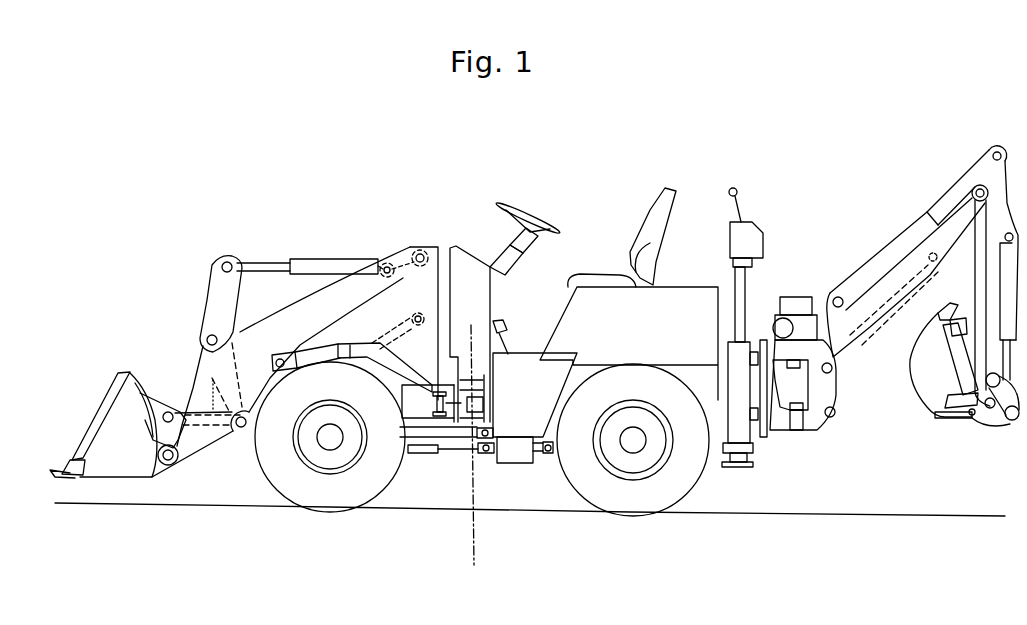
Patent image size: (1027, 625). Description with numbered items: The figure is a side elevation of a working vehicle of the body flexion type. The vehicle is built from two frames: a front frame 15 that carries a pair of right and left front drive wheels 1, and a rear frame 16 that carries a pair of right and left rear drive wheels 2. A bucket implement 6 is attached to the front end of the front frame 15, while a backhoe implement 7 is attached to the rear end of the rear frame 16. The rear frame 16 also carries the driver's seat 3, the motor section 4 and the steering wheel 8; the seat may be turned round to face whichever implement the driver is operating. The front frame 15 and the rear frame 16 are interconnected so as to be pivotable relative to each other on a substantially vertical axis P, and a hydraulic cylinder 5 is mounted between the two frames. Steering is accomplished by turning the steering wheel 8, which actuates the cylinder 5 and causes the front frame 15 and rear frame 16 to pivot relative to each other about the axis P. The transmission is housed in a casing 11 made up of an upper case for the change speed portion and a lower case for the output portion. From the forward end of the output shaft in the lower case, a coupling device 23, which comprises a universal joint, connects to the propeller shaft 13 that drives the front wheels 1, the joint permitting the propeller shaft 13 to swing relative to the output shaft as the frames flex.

The front drive wheels 1 is at (265, 471).
The rear drive wheels 2 is at (688, 484).
The driver's seat 3 is at (641, 224).
The motor section 4 is at (688, 287).
The hydraulic cylinder 5 is at (486, 402).
The bucket implement 6 is at (136, 367).
The backhoe implement 7 is at (943, 420).
The steering wheel 8 is at (530, 207).
The casing 11 is at (523, 460).
The propeller shaft 13 is at (451, 456).
The front frame 15 is at (420, 410).
The rear frame 16 is at (528, 358).
The coupling device 23 is at (487, 455).
The vertical axis P is at (471, 455).